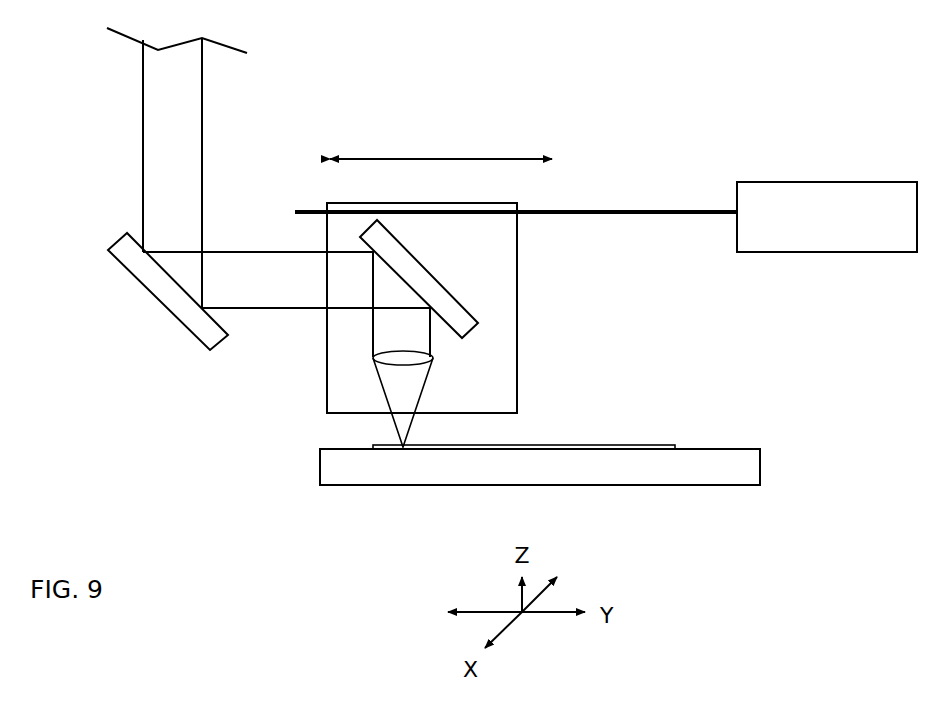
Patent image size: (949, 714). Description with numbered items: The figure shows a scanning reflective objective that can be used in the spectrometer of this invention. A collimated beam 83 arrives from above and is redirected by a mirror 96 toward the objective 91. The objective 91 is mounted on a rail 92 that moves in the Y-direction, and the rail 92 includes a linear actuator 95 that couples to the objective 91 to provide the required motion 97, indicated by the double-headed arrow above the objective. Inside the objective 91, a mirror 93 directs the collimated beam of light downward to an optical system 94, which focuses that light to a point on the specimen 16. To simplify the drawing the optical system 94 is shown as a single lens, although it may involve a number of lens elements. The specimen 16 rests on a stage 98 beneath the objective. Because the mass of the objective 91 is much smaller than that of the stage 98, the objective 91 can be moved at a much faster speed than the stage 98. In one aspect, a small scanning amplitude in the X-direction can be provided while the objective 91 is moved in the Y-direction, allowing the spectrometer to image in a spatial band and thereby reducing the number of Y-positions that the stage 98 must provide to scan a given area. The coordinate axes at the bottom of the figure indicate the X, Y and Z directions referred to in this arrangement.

The collimated beam 83 is at (166, 155).
The mirror 96 is at (170, 298).
The objective 91 is at (517, 312).
The mirror 93 is at (422, 278).
The optical system 94 is at (433, 362).
The rail 92 is at (642, 210).
The linear actuator 95 is at (768, 182).
The motion 97 is at (422, 159).
The specimen 16 is at (595, 444).
The stage 98 is at (320, 461).